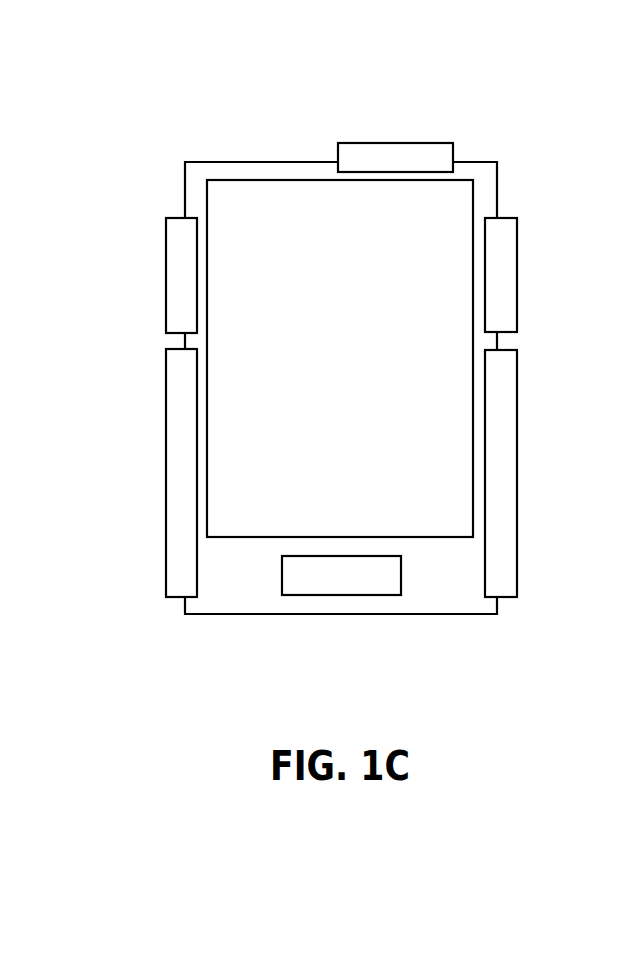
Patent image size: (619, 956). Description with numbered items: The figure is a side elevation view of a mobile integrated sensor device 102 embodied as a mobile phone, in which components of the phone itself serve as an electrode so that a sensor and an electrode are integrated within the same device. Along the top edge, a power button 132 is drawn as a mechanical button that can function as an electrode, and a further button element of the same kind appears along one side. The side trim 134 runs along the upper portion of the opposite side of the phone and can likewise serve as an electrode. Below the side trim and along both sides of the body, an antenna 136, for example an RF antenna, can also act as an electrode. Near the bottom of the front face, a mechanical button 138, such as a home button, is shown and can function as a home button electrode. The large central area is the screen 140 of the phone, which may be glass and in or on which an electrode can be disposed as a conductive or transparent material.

The mobile integrated sensor device 102 is at (196, 98).
The power button 132 is at (396, 152).
The side trim 134 is at (176, 275).
The antenna 136 is at (177, 472).
The mechanical button 138 is at (340, 596).
The screen 140 is at (242, 539).